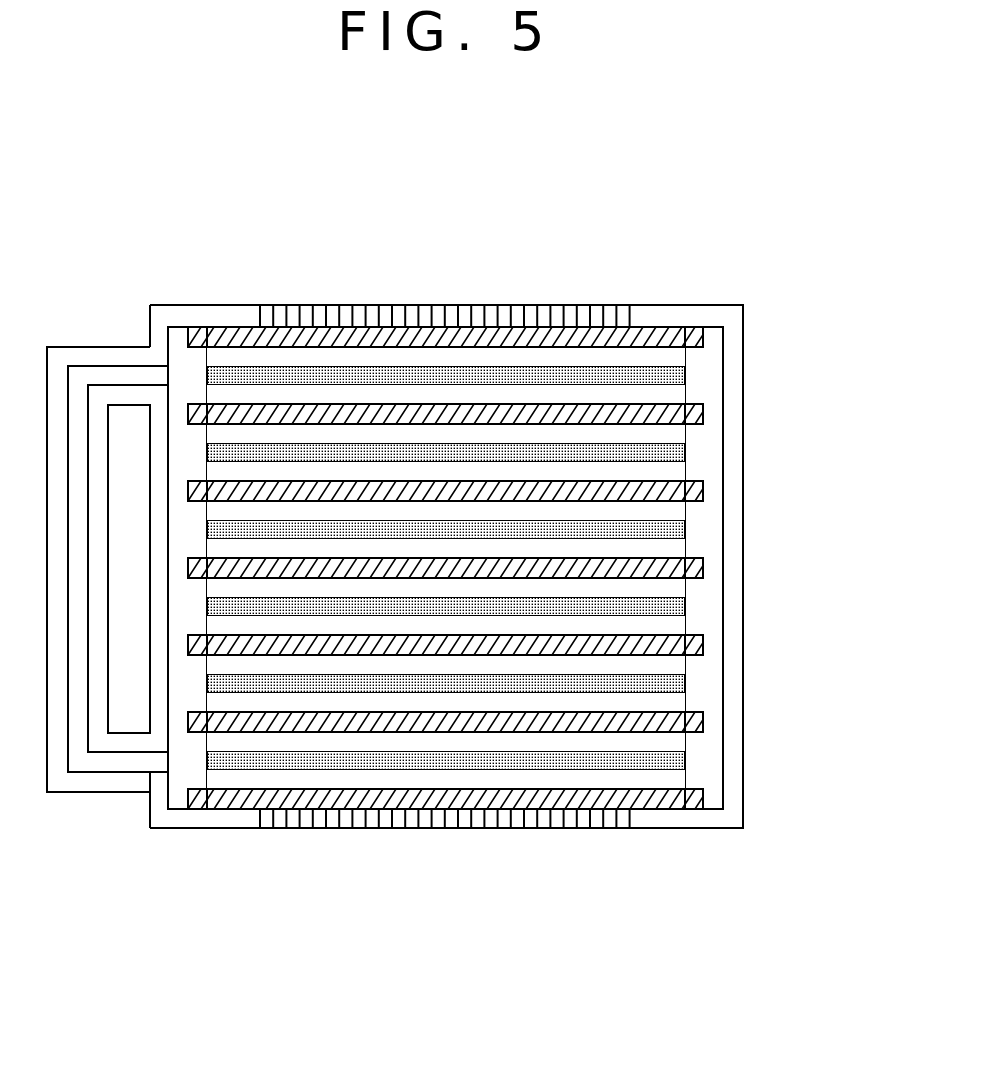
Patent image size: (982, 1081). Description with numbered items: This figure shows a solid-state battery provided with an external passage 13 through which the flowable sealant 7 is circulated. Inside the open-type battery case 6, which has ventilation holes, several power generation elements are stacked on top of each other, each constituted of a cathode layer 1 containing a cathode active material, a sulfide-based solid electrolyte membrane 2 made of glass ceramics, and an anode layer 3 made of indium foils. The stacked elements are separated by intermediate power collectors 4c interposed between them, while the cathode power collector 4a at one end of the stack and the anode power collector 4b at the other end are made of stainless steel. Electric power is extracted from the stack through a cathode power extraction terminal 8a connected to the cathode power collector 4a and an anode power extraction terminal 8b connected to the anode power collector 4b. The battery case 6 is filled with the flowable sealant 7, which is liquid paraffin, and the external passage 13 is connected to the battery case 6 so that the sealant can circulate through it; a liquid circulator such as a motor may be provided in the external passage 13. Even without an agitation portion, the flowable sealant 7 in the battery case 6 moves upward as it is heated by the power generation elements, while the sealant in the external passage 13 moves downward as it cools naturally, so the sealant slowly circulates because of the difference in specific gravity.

The cathode layer 1 is at (700, 353).
The sulfide-based solid electrolyte membrane 2 is at (700, 376).
The anode layer 3 is at (700, 396).
The cathode power collector 4a is at (703, 337).
The anode power collector 4b is at (703, 799).
The intermediate power collector 4c is at (703, 414).
The battery case 6 is at (666, 321).
The flowable sealant 7 is at (179, 372).
The cathode power extraction terminal 8a is at (447, 319).
The anode power extraction terminal 8b is at (452, 820).
The external passage 13 is at (150, 300).